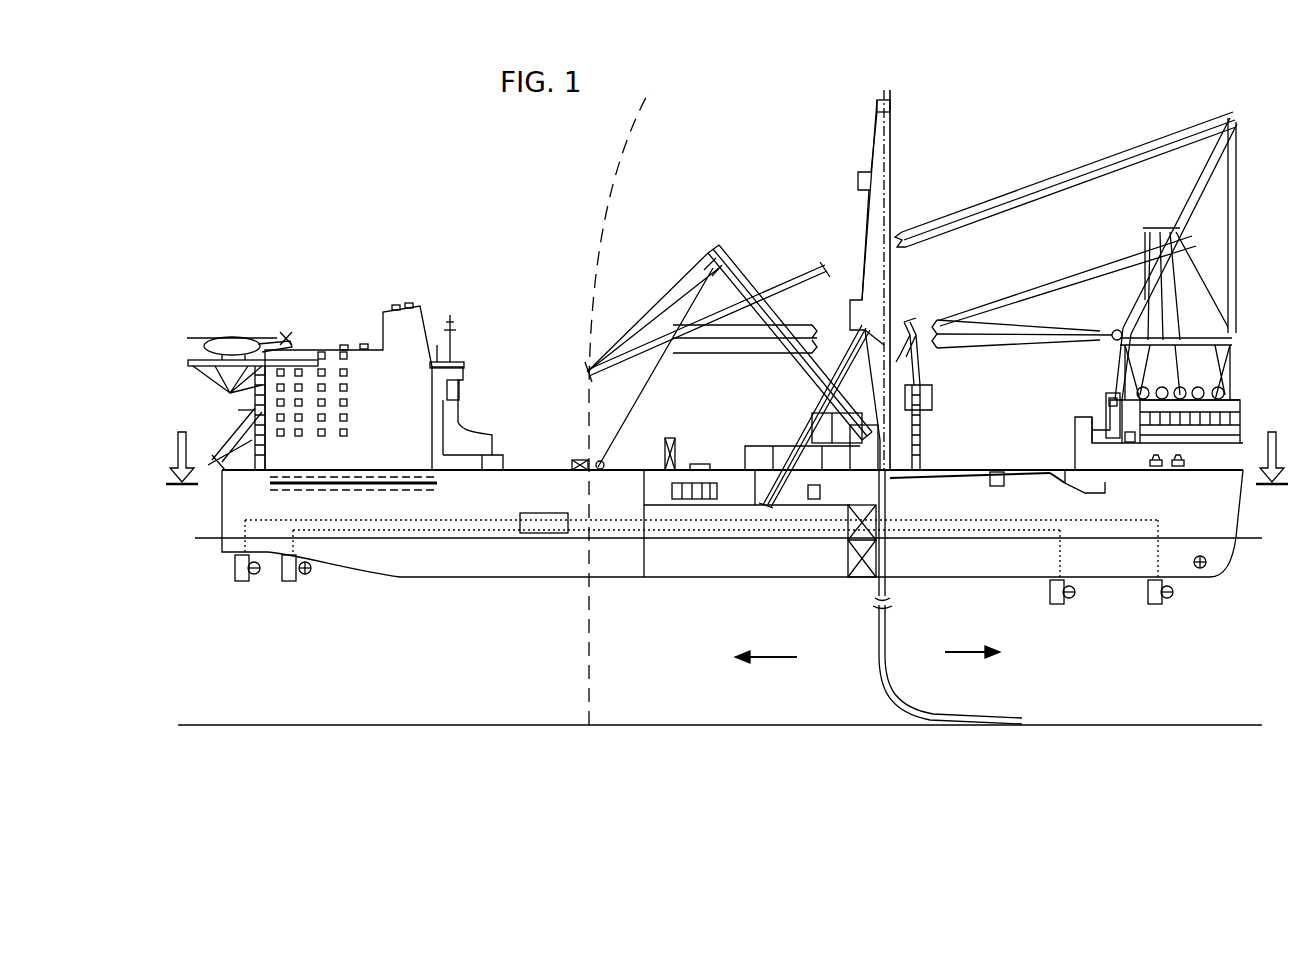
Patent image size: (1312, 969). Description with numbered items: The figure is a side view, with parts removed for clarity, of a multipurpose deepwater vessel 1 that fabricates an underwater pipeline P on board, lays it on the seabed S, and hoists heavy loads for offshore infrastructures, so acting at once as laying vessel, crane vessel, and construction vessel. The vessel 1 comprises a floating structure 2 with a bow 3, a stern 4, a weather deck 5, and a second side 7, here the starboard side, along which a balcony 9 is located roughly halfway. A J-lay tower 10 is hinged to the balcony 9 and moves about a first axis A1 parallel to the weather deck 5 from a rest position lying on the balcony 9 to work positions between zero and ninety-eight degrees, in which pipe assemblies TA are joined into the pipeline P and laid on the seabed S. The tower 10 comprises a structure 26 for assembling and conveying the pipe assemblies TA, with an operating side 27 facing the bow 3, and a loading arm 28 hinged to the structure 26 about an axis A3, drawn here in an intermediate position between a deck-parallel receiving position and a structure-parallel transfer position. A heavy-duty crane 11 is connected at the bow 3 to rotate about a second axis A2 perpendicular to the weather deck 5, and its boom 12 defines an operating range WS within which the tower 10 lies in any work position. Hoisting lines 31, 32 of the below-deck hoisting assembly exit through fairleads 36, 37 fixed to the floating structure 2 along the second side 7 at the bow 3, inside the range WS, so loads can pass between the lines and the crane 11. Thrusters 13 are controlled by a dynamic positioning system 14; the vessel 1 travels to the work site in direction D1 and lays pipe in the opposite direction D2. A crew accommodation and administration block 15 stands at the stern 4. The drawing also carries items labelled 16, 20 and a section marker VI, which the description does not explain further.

The multipurpose deepwater vessel 1 is at (1095, 120).
The floating structure 2 is at (1232, 504).
The bow 3 is at (1270, 430).
The stern 4 is at (213, 425).
The weather deck 5 is at (526, 460).
The second side 7 is at (607, 487).
The balcony 9 is at (730, 478).
The J-lay tower 10 is at (922, 160).
The heavy-duty crane 11 is at (1258, 258).
The boom 12 is at (1012, 328).
The thrusters 13 is at (242, 582).
The dynamic positioning system 14 is at (541, 513).
The crew accommodation and administration block 15 is at (360, 297).
The deck crane 16 is at (942, 364).
The storage area 20 is at (248, 481).
The structure 26 is at (875, 216).
The operating side 27 is at (908, 284).
The loading arm 28 is at (815, 376).
The hoisting line 31 is at (963, 470).
The hoisting line 32 is at (1028, 470).
The fairlead 36 is at (1002, 470).
The fairlead 37 is at (1098, 482).
The first axis A1 is at (866, 476).
The second axis A2 is at (1185, 448).
The axis A3 is at (816, 422).
The pipe assemblies TA is at (780, 275).
The operating range WS is at (602, 194).
The seabed S is at (654, 724).
The underwater pipeline P is at (886, 688).
The direction D1 is at (972, 663).
The direction D2 is at (766, 666).
The section view VI is at (727, 456).